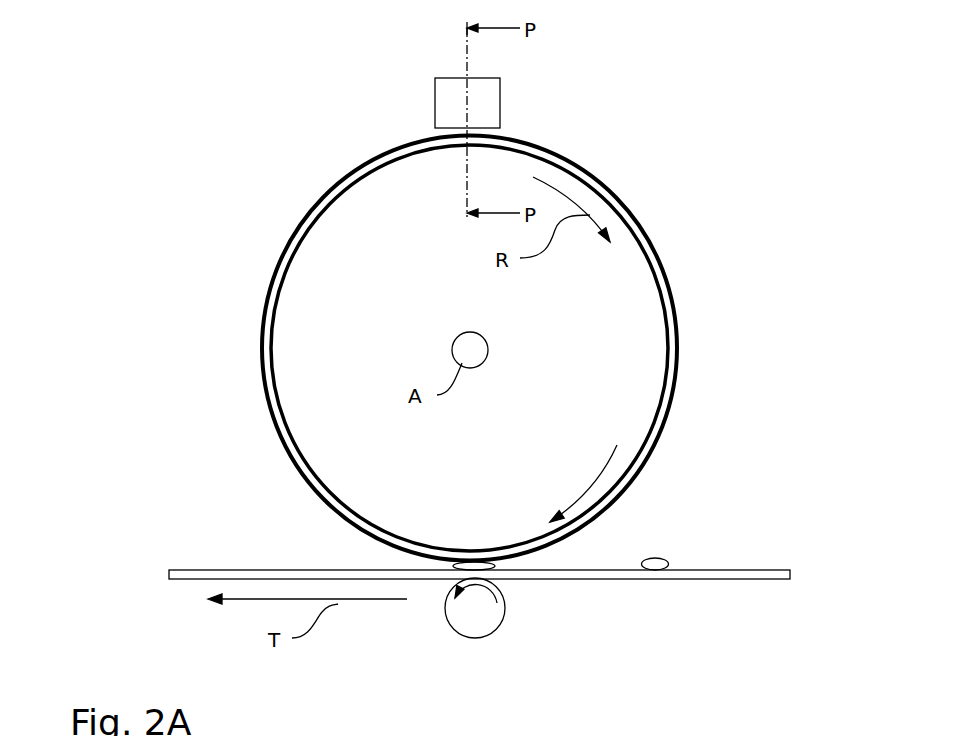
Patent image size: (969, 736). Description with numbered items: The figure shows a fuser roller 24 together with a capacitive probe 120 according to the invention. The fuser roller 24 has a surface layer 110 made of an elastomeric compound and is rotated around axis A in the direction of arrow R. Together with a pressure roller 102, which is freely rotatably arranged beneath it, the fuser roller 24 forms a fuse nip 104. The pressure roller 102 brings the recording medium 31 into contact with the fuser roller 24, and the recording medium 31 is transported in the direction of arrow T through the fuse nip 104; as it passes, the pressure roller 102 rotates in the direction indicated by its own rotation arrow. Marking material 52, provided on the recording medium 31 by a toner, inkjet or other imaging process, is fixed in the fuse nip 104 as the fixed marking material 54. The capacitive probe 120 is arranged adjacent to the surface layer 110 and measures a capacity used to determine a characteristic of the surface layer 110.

The fuser roller 24 is at (502, 348).
The surface layer 110 is at (338, 194).
The capacitive probe 120 is at (435, 102).
The fuse nip 104 is at (402, 560).
The recording medium 31 is at (479, 588).
The marking material 52 is at (657, 558).
The marking material 54 is at (493, 570).
The pressure roller 102 is at (477, 638).